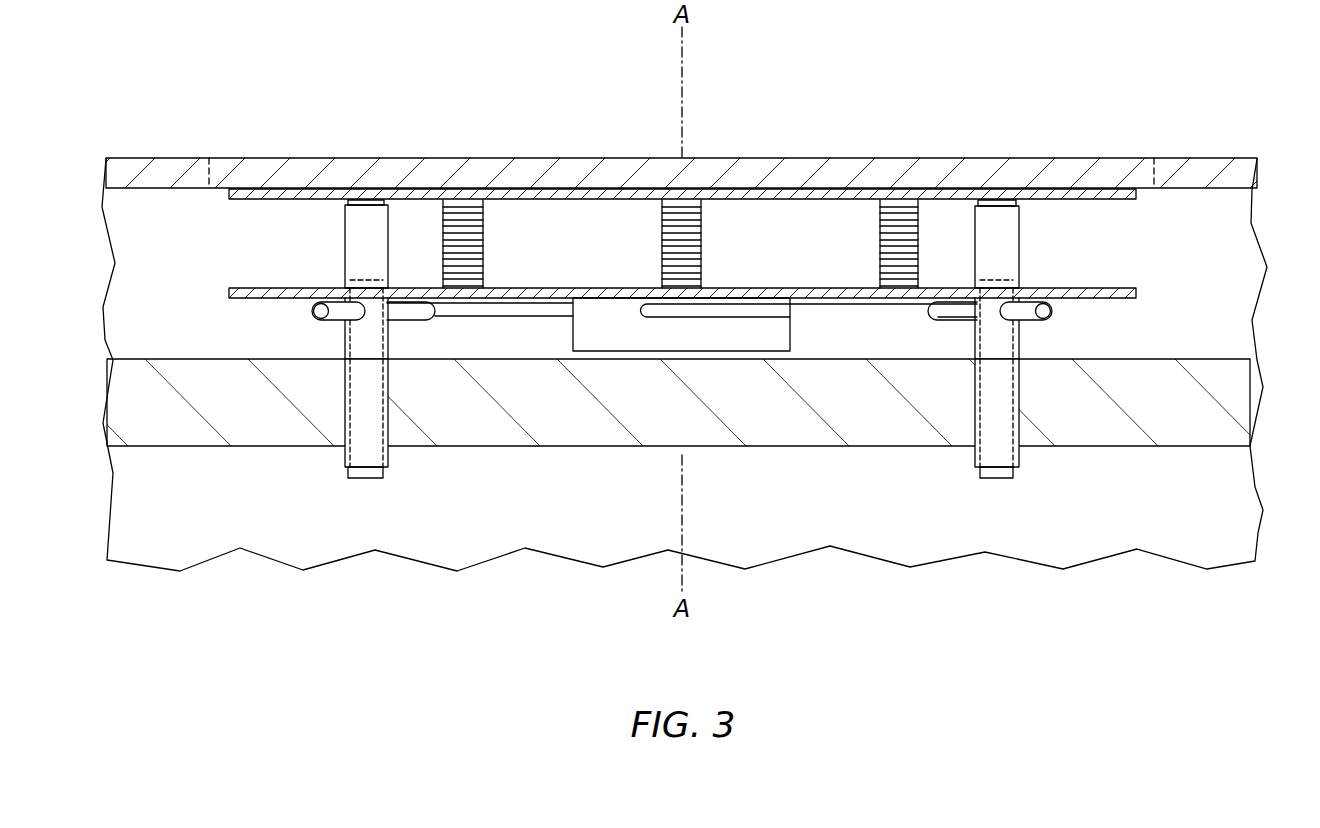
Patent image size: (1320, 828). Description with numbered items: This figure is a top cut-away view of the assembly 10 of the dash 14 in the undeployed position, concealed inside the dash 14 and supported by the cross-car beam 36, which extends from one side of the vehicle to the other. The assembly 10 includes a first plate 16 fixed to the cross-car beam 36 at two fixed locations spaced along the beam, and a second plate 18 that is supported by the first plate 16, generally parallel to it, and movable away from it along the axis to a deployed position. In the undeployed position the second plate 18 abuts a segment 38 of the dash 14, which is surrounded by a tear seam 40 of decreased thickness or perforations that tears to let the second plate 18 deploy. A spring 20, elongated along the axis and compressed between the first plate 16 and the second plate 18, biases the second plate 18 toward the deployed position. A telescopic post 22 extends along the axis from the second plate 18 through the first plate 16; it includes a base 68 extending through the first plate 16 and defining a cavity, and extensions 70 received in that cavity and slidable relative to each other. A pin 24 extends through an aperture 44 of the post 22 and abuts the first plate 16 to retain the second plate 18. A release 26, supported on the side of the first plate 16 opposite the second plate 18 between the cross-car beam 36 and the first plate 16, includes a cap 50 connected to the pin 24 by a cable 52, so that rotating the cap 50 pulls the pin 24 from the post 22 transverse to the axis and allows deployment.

The assembly 10 is at (1147, 242).
The dash 14 is at (1225, 170).
The first plate 16 is at (238, 299).
The second plate 18 is at (238, 201).
The spring 20 is at (484, 232).
The post 22 is at (344, 238).
The pin 24 is at (320, 319).
The release 26 is at (560, 327).
The cross-car beam 36 is at (480, 450).
The segment 38 is at (278, 158).
The tear seam 40 is at (208, 176).
The aperture 44 is at (360, 305).
The cap 50 is at (640, 330).
The cable 52 is at (472, 319).
The base 68 is at (378, 373).
The extensions 70 is at (347, 203).